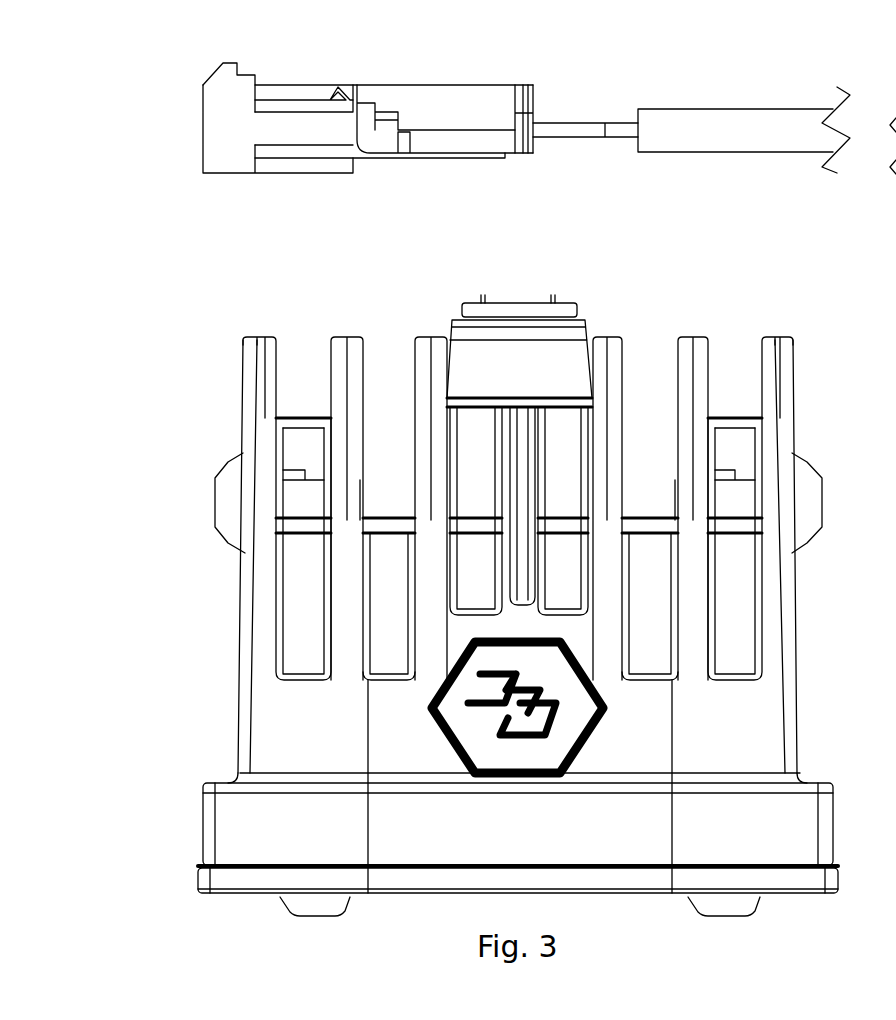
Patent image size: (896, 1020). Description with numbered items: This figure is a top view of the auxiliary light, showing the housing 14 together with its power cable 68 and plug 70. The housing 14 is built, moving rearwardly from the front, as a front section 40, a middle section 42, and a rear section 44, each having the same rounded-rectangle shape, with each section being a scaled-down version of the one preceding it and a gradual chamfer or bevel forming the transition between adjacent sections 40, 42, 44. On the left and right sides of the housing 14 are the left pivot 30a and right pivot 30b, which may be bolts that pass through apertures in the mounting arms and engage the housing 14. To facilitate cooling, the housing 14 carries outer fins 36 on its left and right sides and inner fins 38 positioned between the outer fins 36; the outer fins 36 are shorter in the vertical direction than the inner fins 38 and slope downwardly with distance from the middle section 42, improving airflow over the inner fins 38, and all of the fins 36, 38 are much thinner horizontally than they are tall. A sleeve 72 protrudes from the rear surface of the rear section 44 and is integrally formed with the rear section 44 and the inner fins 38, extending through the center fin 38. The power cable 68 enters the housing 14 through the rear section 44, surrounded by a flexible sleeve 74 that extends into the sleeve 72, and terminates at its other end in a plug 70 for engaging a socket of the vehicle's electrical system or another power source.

The housing 14 is at (805, 703).
The left pivot 30a is at (820, 505).
The right pivot 30b is at (225, 518).
The outer fins 36 is at (260, 335).
The inner fins 38 is at (350, 335).
The front section 40 is at (818, 827).
The middle section 42 is at (785, 753).
The rear section 44 is at (727, 598).
The power cable 68 is at (713, 142).
The plug 70 is at (245, 158).
The sleeve 72 is at (560, 453).
The flexible sleeve 74 is at (530, 352).